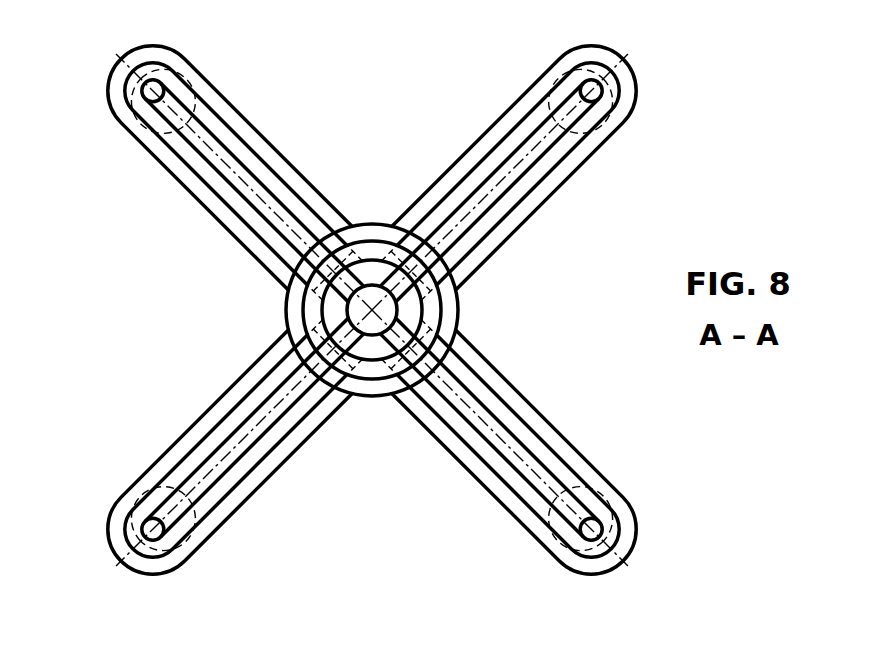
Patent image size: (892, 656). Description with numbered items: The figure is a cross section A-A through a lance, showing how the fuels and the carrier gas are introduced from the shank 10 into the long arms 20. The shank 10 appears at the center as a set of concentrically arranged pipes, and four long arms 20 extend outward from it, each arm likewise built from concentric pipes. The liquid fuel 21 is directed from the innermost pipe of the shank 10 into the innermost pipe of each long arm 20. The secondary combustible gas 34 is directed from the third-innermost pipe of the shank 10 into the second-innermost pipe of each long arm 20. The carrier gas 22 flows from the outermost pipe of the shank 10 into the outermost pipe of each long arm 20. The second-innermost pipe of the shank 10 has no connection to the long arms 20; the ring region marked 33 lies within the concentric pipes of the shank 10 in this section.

The shank 10 is at (285, 315).
The long arm 20 is at (197, 202).
The liquid fuel 21 is at (543, 133).
The carrier gas 22 is at (457, 175).
The inner hub ring 33 is at (369, 350).
The secondary combustible gas 34 is at (500, 153).